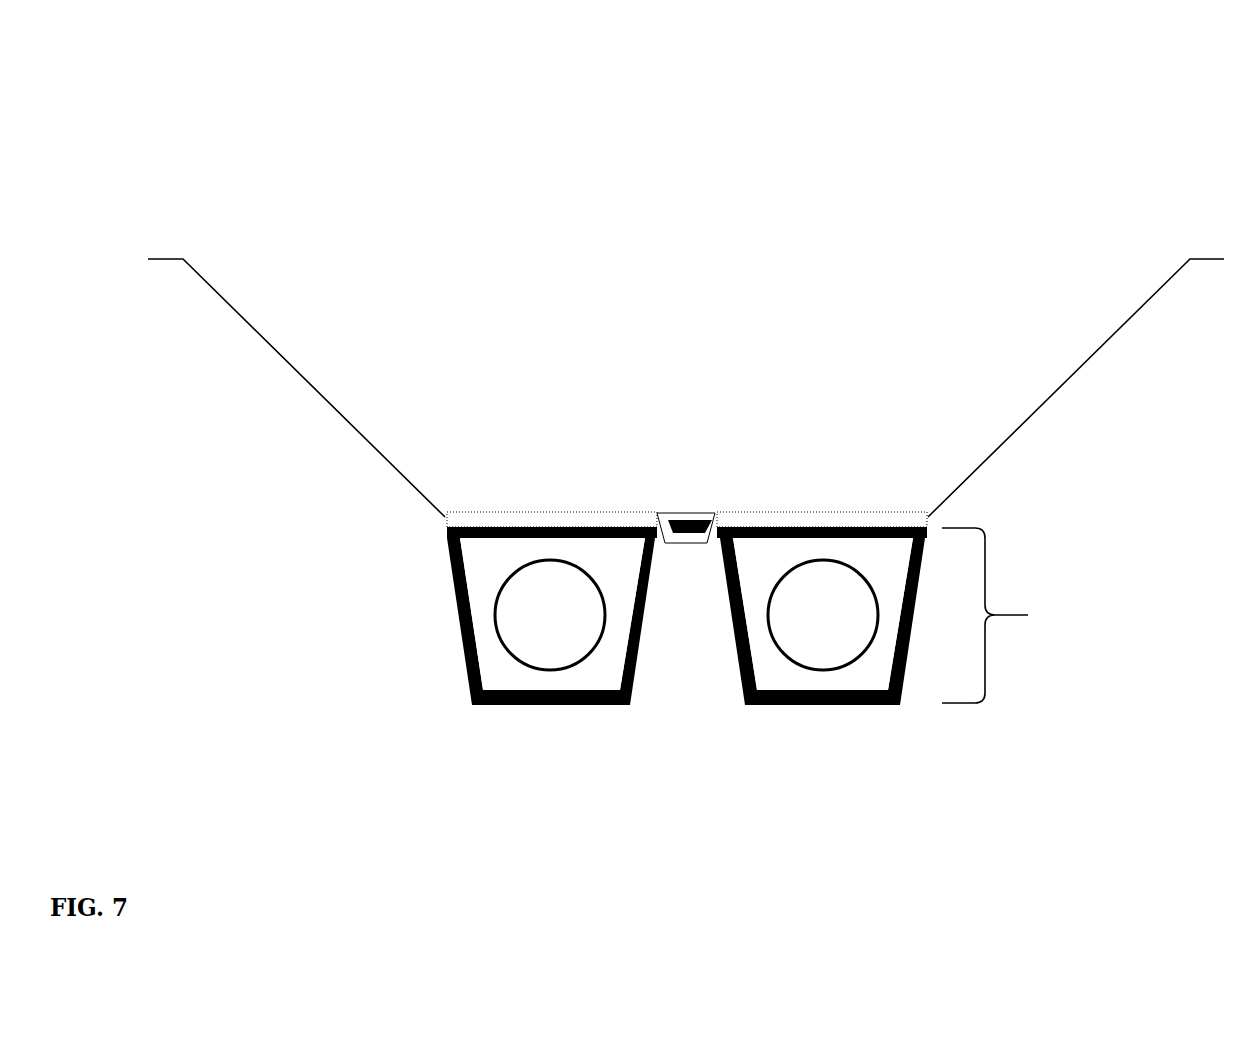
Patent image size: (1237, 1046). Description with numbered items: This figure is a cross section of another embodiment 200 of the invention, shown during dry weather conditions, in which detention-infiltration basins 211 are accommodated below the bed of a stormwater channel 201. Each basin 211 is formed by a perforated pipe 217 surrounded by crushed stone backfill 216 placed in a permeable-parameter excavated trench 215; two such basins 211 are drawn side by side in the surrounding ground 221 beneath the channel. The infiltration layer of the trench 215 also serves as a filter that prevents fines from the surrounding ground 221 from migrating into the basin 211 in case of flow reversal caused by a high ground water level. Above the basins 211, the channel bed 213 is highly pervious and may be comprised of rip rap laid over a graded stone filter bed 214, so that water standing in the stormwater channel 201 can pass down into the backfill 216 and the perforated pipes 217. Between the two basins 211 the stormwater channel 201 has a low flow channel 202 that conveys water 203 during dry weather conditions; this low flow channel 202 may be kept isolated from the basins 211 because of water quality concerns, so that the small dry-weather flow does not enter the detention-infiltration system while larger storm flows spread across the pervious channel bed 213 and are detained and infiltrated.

The embodiment 200 is at (184, 117).
The stormwater channel 201 is at (281, 354).
The low flow channel 202 is at (710, 530).
The water 203 is at (677, 521).
The detention-infiltration basin 211 is at (1012, 615).
The channel bed 213 is at (514, 517).
The graded stone filter bed 214 is at (445, 532).
The permeable-parameter excavated trench 215 is at (463, 617).
The crushed stone backfill 216 is at (480, 578).
The perforated pipe 217 is at (528, 664).
The substrate 221 is at (226, 563).